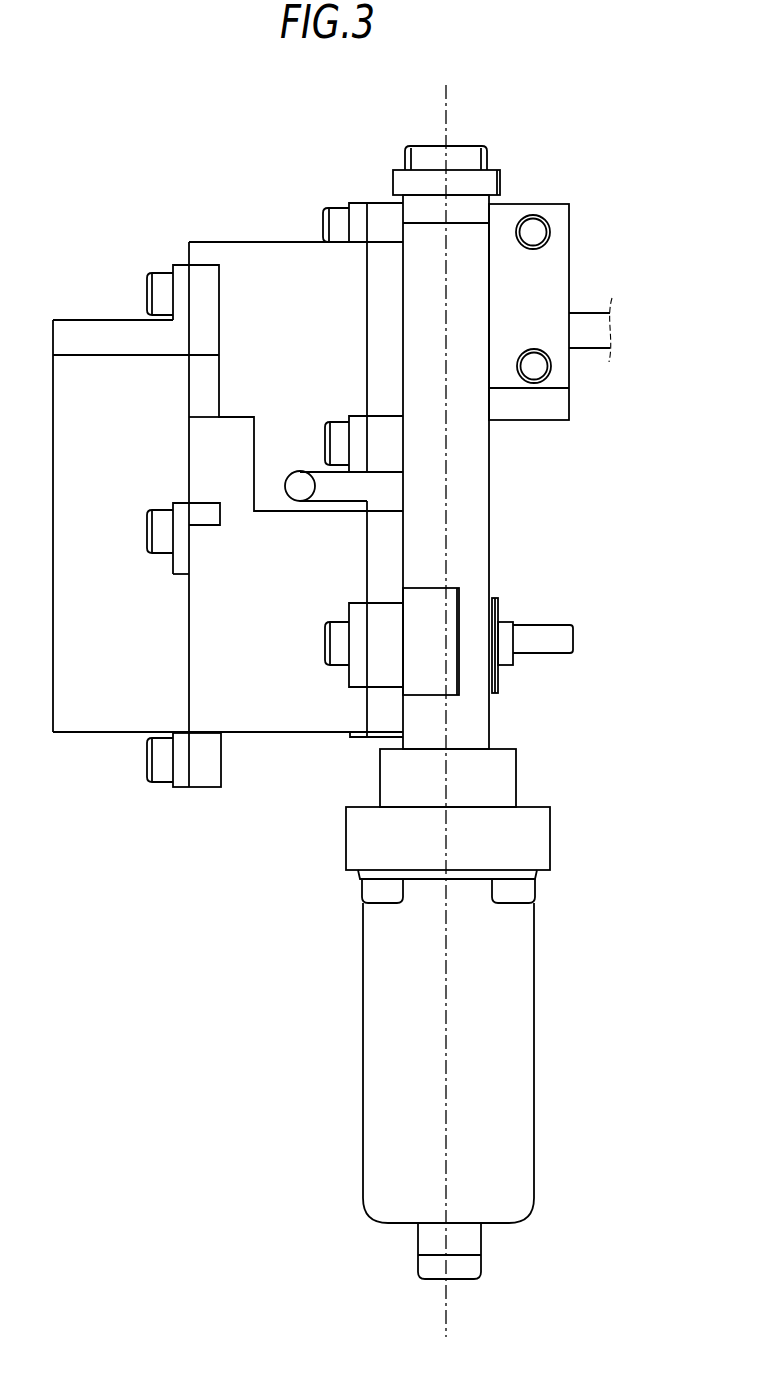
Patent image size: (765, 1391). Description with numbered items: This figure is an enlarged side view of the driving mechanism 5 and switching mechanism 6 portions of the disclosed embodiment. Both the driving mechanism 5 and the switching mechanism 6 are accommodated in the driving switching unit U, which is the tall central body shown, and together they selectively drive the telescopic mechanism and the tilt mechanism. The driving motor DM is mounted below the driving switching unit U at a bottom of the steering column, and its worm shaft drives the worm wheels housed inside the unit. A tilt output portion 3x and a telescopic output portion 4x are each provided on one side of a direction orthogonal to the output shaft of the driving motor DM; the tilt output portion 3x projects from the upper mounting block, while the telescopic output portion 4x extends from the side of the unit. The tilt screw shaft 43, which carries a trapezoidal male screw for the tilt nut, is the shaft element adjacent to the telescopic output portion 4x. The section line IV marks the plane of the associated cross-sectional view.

The driving mechanism 5 is at (526, 193).
The switching mechanism 6 is at (281, 231).
The tilt output portion 3x is at (583, 339).
The driving switching unit U is at (503, 494).
The telescopic output portion 4x is at (575, 638).
The tilt screw shaft 43 is at (551, 640).
The driving motor DM is at (373, 1072).
The section line IV is at (450, 102).